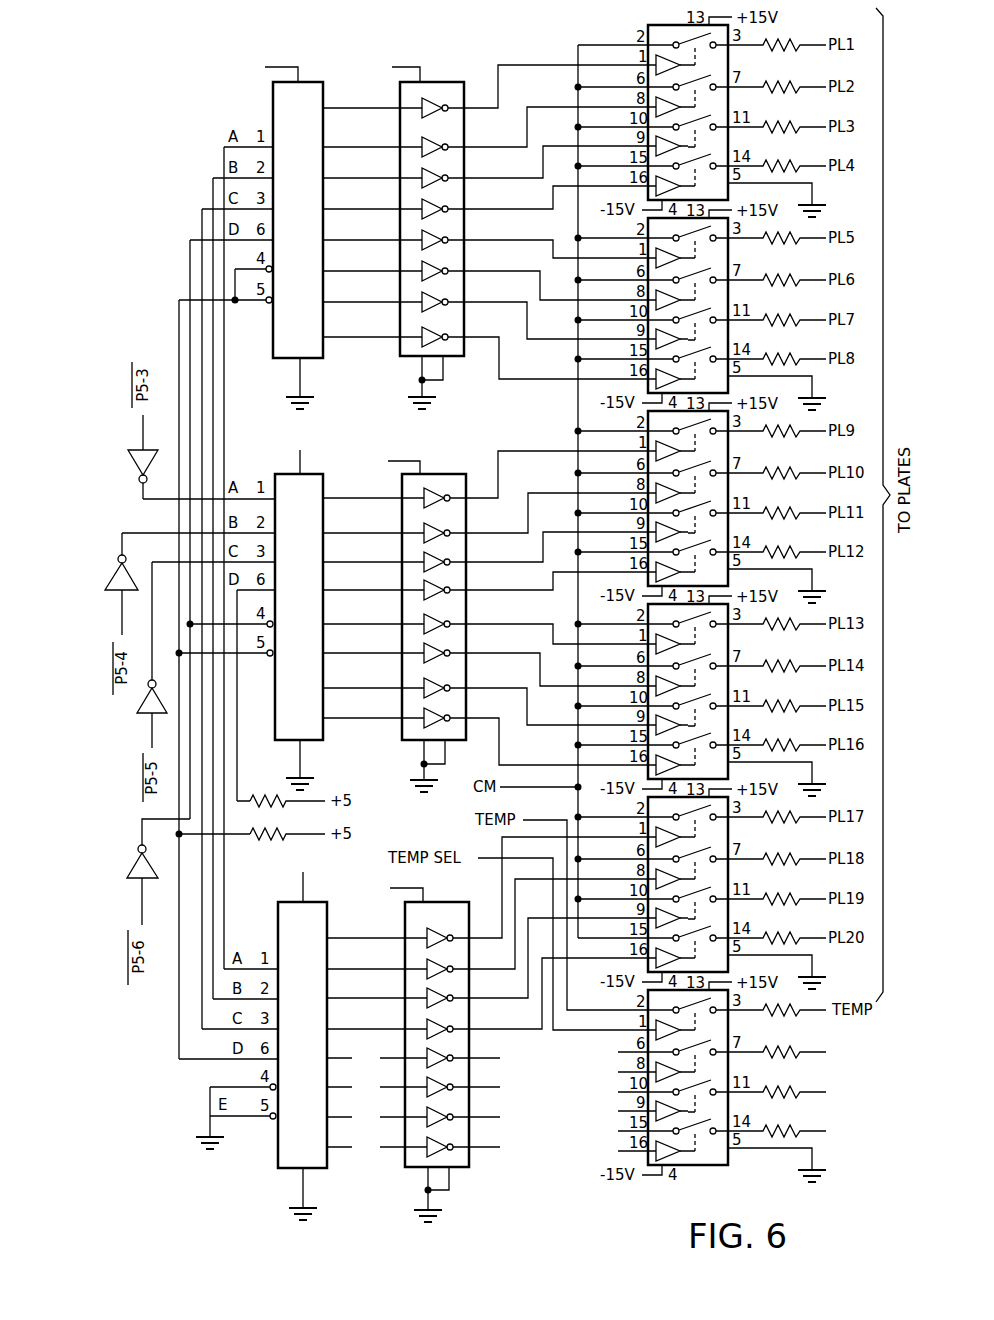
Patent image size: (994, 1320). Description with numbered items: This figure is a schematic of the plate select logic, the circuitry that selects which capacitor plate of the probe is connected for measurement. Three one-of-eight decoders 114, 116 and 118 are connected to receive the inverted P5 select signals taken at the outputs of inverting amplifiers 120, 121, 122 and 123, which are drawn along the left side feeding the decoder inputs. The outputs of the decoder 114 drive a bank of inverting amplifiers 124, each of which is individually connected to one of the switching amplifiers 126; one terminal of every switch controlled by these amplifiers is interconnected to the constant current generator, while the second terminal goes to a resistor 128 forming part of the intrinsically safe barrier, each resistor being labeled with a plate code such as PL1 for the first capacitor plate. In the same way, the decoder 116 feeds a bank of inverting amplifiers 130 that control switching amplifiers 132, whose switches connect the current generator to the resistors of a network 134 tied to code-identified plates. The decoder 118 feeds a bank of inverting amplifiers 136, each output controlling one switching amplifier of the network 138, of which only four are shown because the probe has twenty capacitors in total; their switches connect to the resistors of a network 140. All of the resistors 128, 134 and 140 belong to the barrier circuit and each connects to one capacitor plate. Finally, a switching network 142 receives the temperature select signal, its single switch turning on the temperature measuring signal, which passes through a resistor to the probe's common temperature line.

The one-of-eight decoder 114 is at (293, 233).
The one-of-eight decoder 116 is at (311, 611).
The one-of-eight decoder 118 is at (314, 1037).
The inverting amplifier 120 is at (150, 866).
The inverting amplifier 121 is at (148, 703).
The inverting amplifier 122 is at (115, 582).
The inverting amplifier 123 is at (152, 456).
The bank of inverting amplifiers 124 is at (461, 74).
The switching amplifiers 126 is at (636, 14).
The resistor 128 is at (786, 40).
The bank of inverting amplifiers 130 is at (458, 468).
The switching amplifiers 132 is at (636, 450).
The resistor network 134 is at (810, 424).
The bank of inverting amplifiers 136 is at (484, 1171).
The switching amplifier network 138 is at (636, 973).
The resistor network 140 is at (818, 808).
The switching network 142 is at (636, 1115).